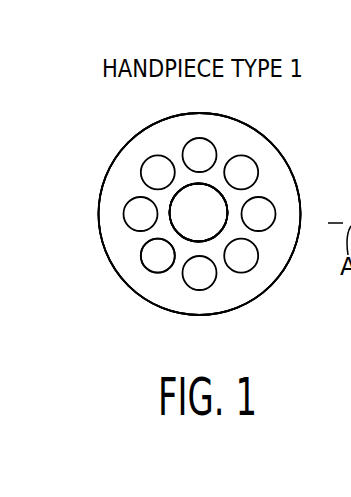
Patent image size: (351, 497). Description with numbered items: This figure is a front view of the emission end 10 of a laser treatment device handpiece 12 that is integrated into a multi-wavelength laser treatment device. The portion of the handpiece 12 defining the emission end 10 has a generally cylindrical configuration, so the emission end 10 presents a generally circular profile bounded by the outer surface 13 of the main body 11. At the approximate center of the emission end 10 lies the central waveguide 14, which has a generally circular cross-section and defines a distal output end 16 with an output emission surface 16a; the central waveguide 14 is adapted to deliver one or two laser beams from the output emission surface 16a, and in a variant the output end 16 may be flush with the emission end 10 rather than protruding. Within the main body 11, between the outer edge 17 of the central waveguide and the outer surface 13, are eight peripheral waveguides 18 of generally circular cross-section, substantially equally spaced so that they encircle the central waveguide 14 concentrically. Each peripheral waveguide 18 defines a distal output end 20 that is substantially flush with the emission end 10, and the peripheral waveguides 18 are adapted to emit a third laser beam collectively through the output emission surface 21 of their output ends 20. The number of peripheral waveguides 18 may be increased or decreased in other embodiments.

The emission end 10 is at (268, 162).
The main body 11 is at (112, 228).
The handpiece 12 is at (120, 125).
The outer surface 13 is at (110, 167).
The central waveguide 14 is at (212, 182).
The output end 16 is at (181, 217).
The output emission surface 16a is at (193, 226).
The outer edge 17 is at (225, 207).
The peripheral waveguides 18 is at (248, 278).
The output end 20 is at (148, 255).
The output emission surface 21 is at (162, 262).